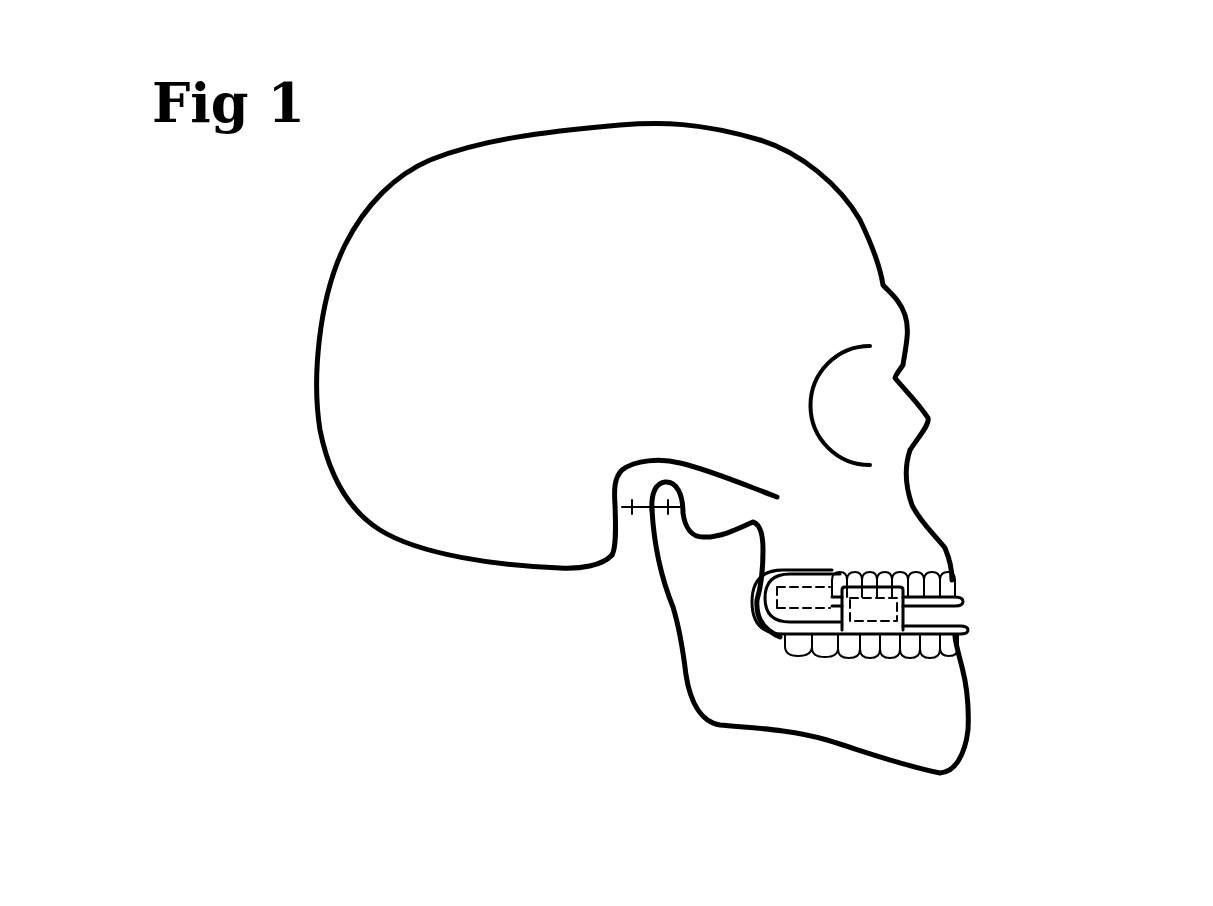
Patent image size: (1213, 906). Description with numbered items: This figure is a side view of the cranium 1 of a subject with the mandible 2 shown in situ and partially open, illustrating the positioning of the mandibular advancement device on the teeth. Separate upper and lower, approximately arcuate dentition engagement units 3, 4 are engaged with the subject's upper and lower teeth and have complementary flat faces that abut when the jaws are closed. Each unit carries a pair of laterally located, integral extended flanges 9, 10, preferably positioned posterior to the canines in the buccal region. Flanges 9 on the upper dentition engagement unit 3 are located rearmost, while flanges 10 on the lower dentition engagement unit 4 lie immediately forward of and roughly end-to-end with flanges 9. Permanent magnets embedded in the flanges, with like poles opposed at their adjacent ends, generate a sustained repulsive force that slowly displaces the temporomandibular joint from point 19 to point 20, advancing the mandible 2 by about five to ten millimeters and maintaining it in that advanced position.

The cranium 1 is at (608, 316).
The mandible 2 is at (722, 686).
The upper dentition engagement unit 3 is at (960, 600).
The lower dentition engagement unit 4 is at (963, 633).
The flanges of upper dentition engagement unit 9 is at (803, 577).
The flanges of lower dentition engagement unit 10 is at (878, 612).
The point 19 is at (632, 507).
The point 20 is at (668, 507).